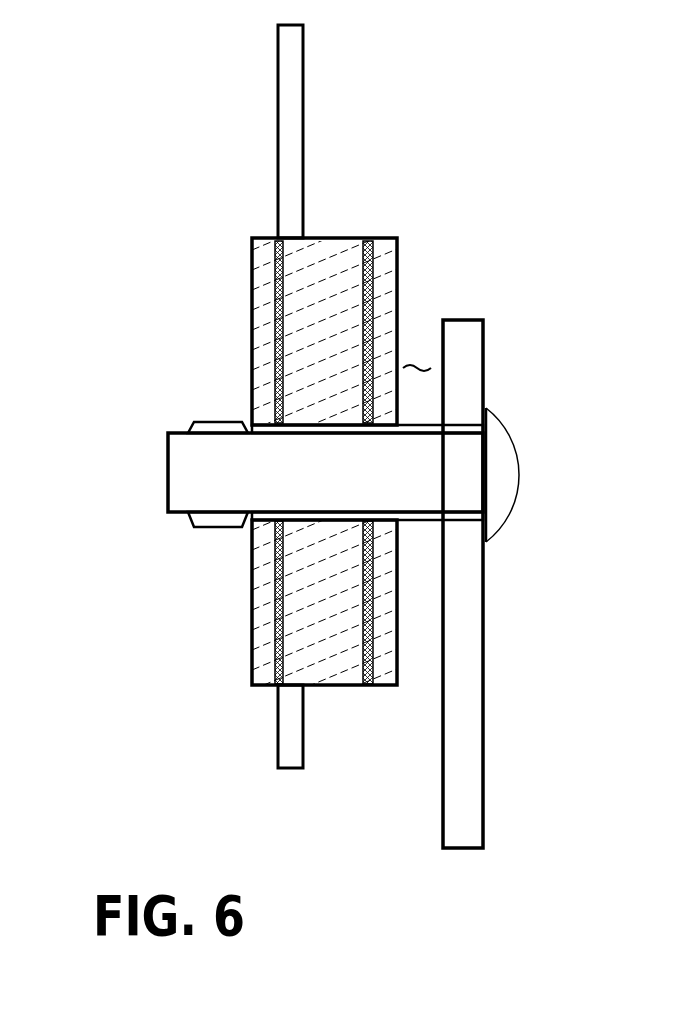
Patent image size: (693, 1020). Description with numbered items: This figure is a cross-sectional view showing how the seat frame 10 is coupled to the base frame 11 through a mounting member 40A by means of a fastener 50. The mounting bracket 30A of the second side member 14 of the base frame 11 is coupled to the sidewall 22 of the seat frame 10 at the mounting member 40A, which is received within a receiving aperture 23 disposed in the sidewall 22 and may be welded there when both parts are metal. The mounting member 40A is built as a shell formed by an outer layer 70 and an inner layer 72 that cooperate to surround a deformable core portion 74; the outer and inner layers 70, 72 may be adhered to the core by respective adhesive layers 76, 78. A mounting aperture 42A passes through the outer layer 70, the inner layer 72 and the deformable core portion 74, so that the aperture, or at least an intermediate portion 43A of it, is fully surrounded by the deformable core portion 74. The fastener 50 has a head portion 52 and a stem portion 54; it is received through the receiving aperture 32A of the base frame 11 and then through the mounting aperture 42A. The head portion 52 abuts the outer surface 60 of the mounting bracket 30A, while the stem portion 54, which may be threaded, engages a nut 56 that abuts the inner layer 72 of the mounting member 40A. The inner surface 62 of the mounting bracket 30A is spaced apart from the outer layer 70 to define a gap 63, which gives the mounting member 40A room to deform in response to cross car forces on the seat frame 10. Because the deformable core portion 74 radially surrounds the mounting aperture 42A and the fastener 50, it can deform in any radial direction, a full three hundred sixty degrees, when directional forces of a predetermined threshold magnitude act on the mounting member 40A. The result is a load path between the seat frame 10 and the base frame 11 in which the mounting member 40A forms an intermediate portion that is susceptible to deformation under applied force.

The seat frame 10 is at (238, 128).
The base frame 11 is at (517, 642).
The second side member 14 is at (497, 705).
The sidewall 22 is at (300, 100).
The receiving aperture 23 is at (307, 237).
The mounting bracket 30A is at (504, 576).
The receiving aperture 32A is at (463, 428).
The mounting member 40A is at (325, 406).
The mounting aperture 42A is at (262, 418).
The intermediate portion 43A is at (322, 418).
The fastener 50 is at (572, 449).
The head portion 52 is at (517, 496).
The stem portion 54 is at (168, 447).
The nut 56 is at (220, 528).
The outer surface 60 is at (483, 560).
The inner surface 62 is at (443, 735).
The gap 63 is at (407, 366).
The outer layer 70 is at (373, 287).
The inner layer 72 is at (272, 262).
The deformable core portion 74 is at (330, 287).
The adhesive layer 76 is at (375, 258).
The adhesive layer 78 is at (272, 290).